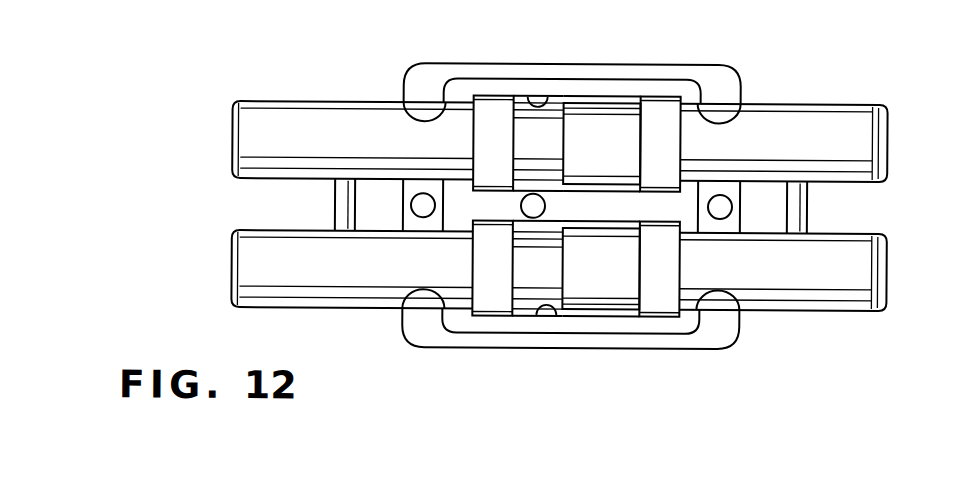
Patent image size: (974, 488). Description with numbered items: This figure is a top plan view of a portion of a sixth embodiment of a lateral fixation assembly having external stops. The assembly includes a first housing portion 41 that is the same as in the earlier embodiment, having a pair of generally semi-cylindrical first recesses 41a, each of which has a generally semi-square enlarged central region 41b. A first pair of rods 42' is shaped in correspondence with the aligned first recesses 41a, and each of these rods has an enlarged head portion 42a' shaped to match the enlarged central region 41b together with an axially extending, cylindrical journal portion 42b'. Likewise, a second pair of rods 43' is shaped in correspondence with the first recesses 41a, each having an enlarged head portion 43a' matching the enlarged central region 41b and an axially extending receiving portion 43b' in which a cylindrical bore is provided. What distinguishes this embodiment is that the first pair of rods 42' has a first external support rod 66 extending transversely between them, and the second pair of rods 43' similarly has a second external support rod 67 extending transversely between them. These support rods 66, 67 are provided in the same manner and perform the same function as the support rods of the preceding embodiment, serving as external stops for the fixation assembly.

The first housing portion 41 is at (713, 78).
The first recesses 41a is at (407, 106).
The enlarged central region 41b is at (527, 108).
The first pair of rods 42' is at (300, 207).
The enlarged head portion 42a' is at (464, 211).
The journal portion 42b' is at (552, 212).
The second pair of rods 43' is at (820, 209).
The enlarged head portion 43a' is at (695, 210).
The receiving portion 43b' is at (619, 207).
The first external support rod 66 is at (337, 198).
The second external support rod 67 is at (795, 198).